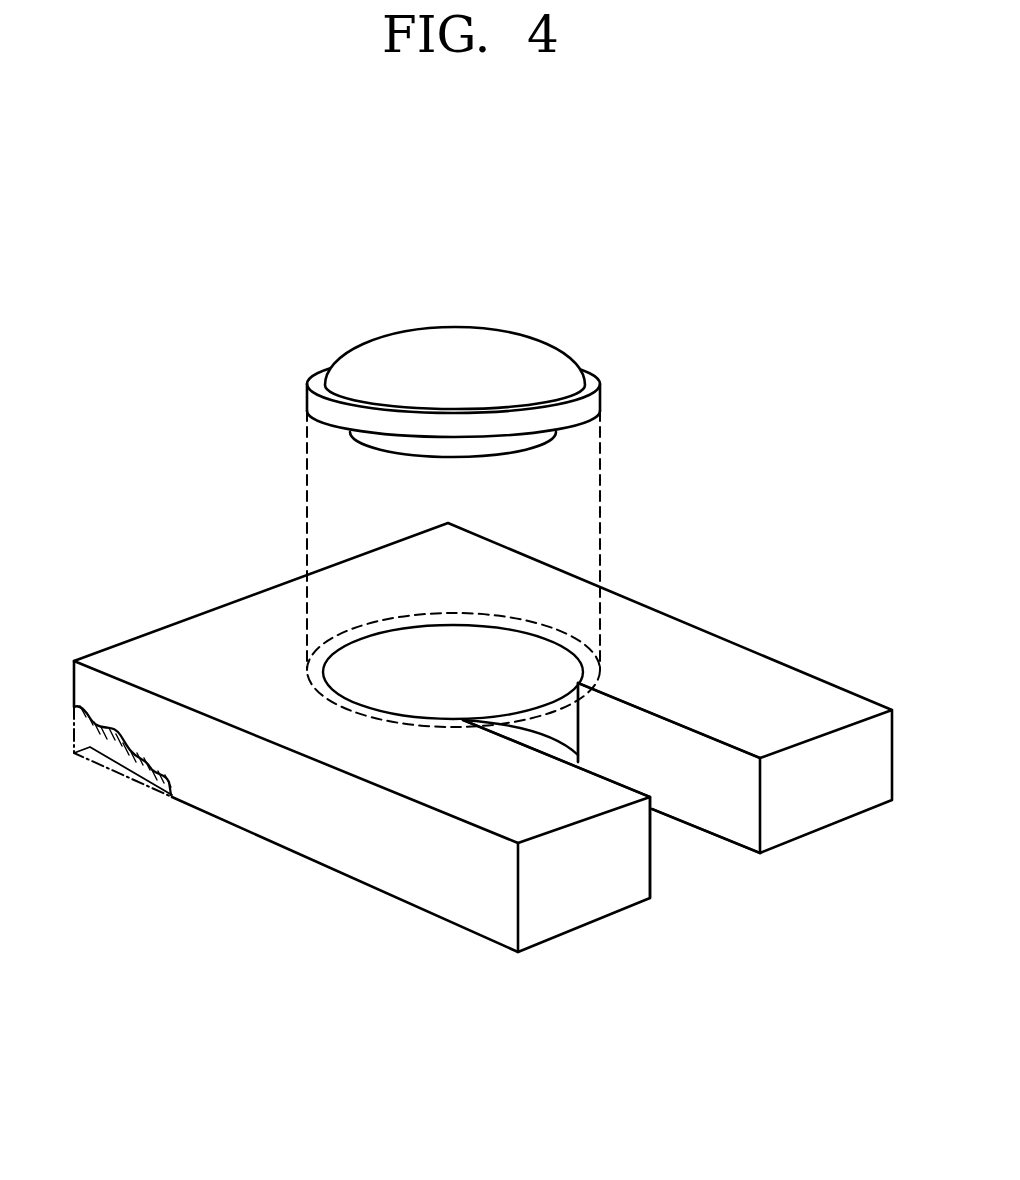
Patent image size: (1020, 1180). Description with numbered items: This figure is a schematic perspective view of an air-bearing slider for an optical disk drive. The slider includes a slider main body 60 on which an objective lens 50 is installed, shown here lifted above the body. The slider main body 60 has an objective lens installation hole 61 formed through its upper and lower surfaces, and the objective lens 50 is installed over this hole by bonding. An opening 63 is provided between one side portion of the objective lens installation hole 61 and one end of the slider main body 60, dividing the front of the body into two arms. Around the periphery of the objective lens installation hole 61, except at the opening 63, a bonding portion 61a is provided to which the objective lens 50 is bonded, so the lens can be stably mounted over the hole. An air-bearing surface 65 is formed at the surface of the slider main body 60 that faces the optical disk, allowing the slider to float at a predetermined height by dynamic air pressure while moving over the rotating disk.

The objective lens 50 is at (580, 298).
The slider main body 60 is at (341, 839).
The objective lens installation hole 61 is at (463, 681).
The bonding portion 61a is at (440, 722).
The opening 63 is at (677, 845).
The air-bearing surface 65 is at (120, 763).